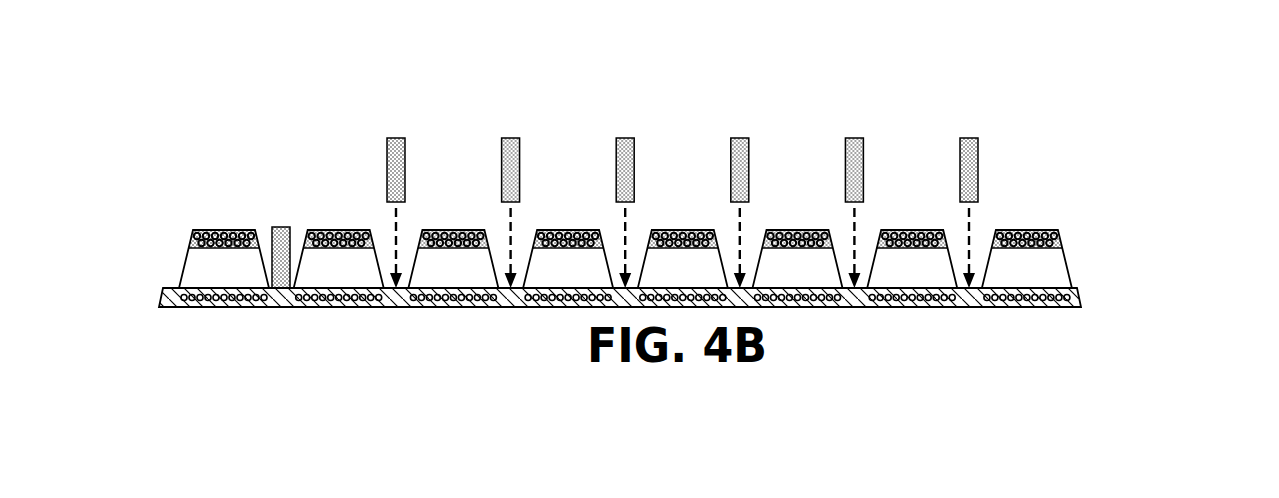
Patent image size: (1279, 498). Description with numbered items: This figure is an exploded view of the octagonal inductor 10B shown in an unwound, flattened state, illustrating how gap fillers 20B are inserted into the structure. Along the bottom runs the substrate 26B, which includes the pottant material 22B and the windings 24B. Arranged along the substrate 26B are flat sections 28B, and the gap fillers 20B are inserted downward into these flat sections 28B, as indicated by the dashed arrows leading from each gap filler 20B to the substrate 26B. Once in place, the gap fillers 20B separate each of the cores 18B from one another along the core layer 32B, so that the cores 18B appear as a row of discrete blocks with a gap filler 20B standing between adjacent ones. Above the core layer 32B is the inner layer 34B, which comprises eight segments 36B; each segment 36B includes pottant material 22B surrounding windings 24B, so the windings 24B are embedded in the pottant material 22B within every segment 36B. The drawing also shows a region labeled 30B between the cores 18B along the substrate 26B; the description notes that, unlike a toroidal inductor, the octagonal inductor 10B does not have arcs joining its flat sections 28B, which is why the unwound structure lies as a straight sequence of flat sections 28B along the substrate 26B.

The octagonal inductor 10B is at (1160, 143).
The cores 18B is at (224, 259).
The gap fillers 20B is at (279, 227).
The pottant material 22B is at (533, 233).
The windings 24B is at (317, 232).
The substrate 26B is at (118, 297).
The flat sections 28B is at (891, 334).
The first region 30B is at (432, 338).
The core layer 32B is at (118, 266).
The inner layer 34B is at (118, 234).
The segments 36B is at (450, 218).